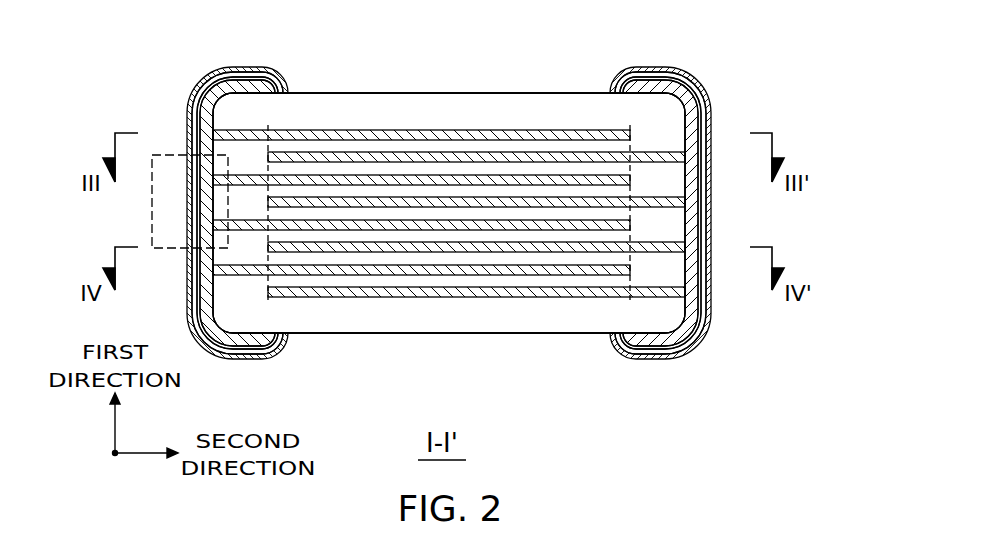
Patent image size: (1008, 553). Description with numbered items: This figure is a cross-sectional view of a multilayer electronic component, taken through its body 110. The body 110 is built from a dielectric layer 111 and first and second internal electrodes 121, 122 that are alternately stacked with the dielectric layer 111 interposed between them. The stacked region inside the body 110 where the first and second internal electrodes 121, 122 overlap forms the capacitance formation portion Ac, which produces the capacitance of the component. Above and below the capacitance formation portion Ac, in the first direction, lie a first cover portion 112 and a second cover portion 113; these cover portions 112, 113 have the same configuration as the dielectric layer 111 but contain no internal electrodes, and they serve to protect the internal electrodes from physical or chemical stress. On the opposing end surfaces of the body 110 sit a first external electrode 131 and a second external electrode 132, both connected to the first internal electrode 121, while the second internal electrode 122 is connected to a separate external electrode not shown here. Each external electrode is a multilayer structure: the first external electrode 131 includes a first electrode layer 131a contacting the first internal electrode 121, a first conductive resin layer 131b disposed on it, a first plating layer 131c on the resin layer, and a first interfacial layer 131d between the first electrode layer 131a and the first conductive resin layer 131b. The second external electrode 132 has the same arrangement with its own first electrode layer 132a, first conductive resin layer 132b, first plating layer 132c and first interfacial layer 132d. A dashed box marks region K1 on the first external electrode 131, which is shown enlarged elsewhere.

The body 110 is at (382, 93).
The dielectric layer 111 is at (313, 168).
The first cover portion 112 is at (445, 108).
The second cover portion 113 is at (462, 318).
The first internal electrode 121 is at (493, 135).
The second internal electrode 122 is at (557, 157).
The first external electrode 131 is at (157, 187).
The first electrode layer 131a is at (247, 82).
The first conductive resin layer 131b is at (200, 105).
The first plating layer 131c is at (195, 118).
The first interfacial layer 131d is at (189, 213).
The second external electrode 132 is at (742, 187).
The first electrode layer 132a is at (651, 82).
The first conductive resin layer 132b is at (698, 105).
The first plating layer 132c is at (703, 118).
The first interfacial layer 132d is at (710, 213).
The capacitance formation portion Ac is at (548, 300).
The region K1 is at (152, 228).